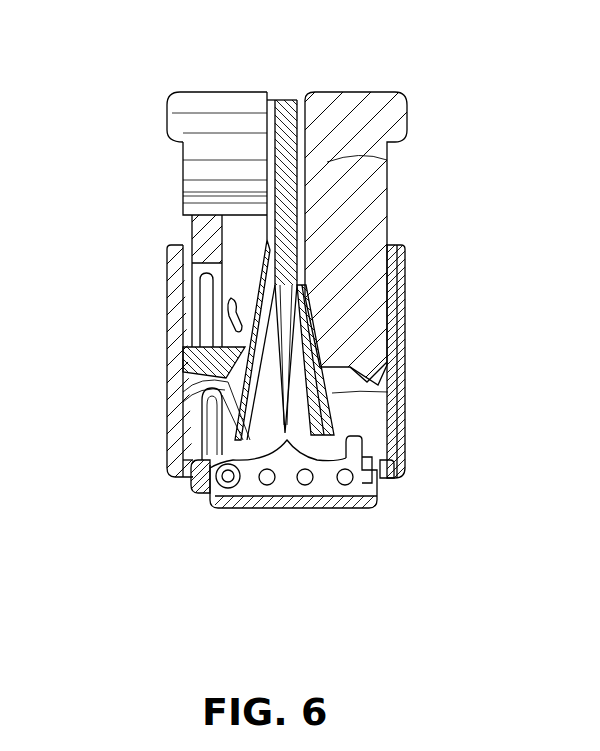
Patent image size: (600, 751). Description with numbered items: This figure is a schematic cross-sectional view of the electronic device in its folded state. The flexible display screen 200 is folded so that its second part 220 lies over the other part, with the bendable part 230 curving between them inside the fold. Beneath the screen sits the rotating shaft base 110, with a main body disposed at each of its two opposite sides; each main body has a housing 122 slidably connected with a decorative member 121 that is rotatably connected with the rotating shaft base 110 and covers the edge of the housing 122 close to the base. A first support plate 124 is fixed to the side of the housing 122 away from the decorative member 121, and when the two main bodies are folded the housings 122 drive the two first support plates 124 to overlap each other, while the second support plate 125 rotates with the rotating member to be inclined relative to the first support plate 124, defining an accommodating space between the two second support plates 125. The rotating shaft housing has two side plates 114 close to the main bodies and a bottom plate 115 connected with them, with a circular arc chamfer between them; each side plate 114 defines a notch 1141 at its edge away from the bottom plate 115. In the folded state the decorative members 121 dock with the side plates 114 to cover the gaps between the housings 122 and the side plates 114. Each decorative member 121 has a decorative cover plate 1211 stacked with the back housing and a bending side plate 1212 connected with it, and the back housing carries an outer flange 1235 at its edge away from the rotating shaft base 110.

The flexible display screen 200 is at (278, 98).
The second part 220 is at (307, 95).
The outer flange 1235 is at (172, 120).
The housing 122 is at (185, 170).
The first support plate 124 is at (183, 196).
The decorative member 121 is at (168, 248).
The decorative cover plate 1211 is at (168, 345).
The second support plate 125 is at (168, 413).
The notch 1141 is at (167, 458).
The bending side plate 1212 is at (190, 488).
The side plate 114 is at (220, 492).
The bottom plate 115 is at (284, 500).
The bendable part 230 is at (323, 397).
The rotating shaft base 110 is at (388, 567).